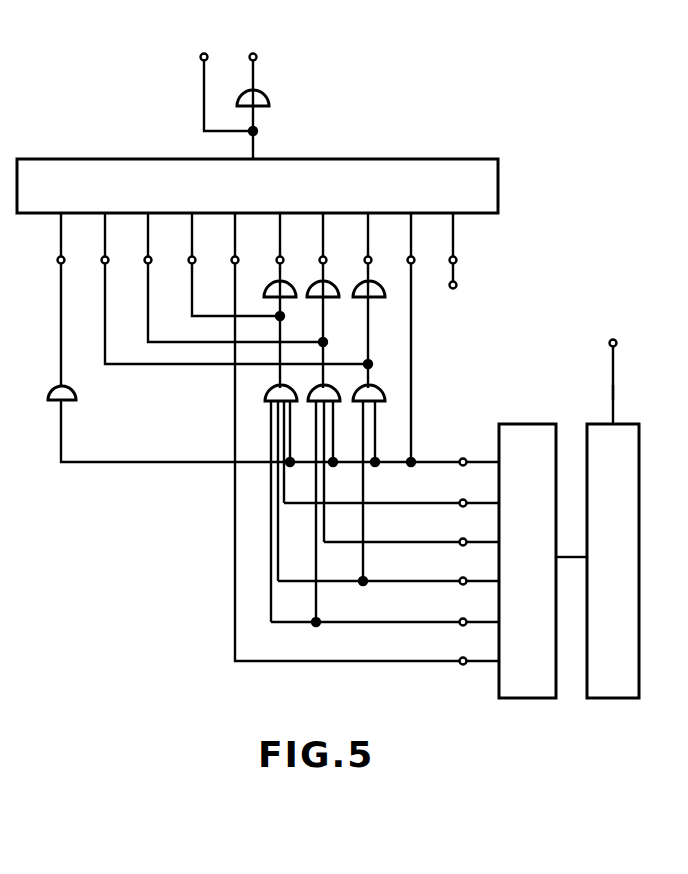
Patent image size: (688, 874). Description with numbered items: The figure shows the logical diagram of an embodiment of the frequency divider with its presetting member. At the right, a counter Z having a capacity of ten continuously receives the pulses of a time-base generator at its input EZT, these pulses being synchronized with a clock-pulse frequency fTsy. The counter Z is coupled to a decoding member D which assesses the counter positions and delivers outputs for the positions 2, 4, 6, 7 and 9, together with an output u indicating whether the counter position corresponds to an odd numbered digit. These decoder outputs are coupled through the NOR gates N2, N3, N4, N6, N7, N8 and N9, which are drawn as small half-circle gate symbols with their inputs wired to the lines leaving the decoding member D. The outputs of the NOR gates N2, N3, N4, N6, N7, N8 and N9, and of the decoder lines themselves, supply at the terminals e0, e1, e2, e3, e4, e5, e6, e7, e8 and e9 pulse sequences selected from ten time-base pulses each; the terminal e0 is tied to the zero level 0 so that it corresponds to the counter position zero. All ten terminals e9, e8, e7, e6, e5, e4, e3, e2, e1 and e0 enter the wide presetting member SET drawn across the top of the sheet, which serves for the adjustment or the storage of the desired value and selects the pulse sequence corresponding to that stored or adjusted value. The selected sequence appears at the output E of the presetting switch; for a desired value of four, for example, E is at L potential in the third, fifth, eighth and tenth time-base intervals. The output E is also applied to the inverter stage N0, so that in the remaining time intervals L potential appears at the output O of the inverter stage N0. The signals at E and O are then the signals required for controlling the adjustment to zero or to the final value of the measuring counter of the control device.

The output of the presetting switch E is at (224, 76).
The output of the inverter stage O is at (253, 90).
The inverter stage N0 is at (266, 92).
The presetting member SET is at (257, 186).
The terminal e9 is at (63, 257).
The terminal e8 is at (107, 257).
The terminal e7 is at (150, 257).
The terminal e6 is at (194, 257).
The terminal e5 is at (237, 257).
The terminal e4 is at (282, 257).
The terminal e3 is at (325, 257).
The terminal e2 is at (370, 257).
The terminal e1 is at (413, 257).
The terminal e0 is at (455, 257).
The zero potential terminal 0 is at (453, 288).
The NOR gate N2 is at (374, 299).
The NOR gate N3 is at (329, 299).
The NOR gate N4 is at (286, 299).
The NOR gate N6 is at (298, 380).
The NOR gate N7 is at (341, 380).
The NOR gate N8 is at (386, 380).
The NOR gate N9 is at (70, 388).
The decoder output for counter position 9 is at (460, 464).
The decoder output for counter position 7 is at (460, 506).
The decoder output for counter position 6 is at (460, 544).
The decoder output for counter position 4 is at (460, 584).
The decoder output for counter position 2 is at (460, 624).
The odd-position decoder output u is at (460, 664).
The decoding member D is at (543, 561).
The counter Z is at (613, 561).
The time-base pulse input EZT is at (612, 340).
The synchronized time-base frequency fTsy is at (614, 392).